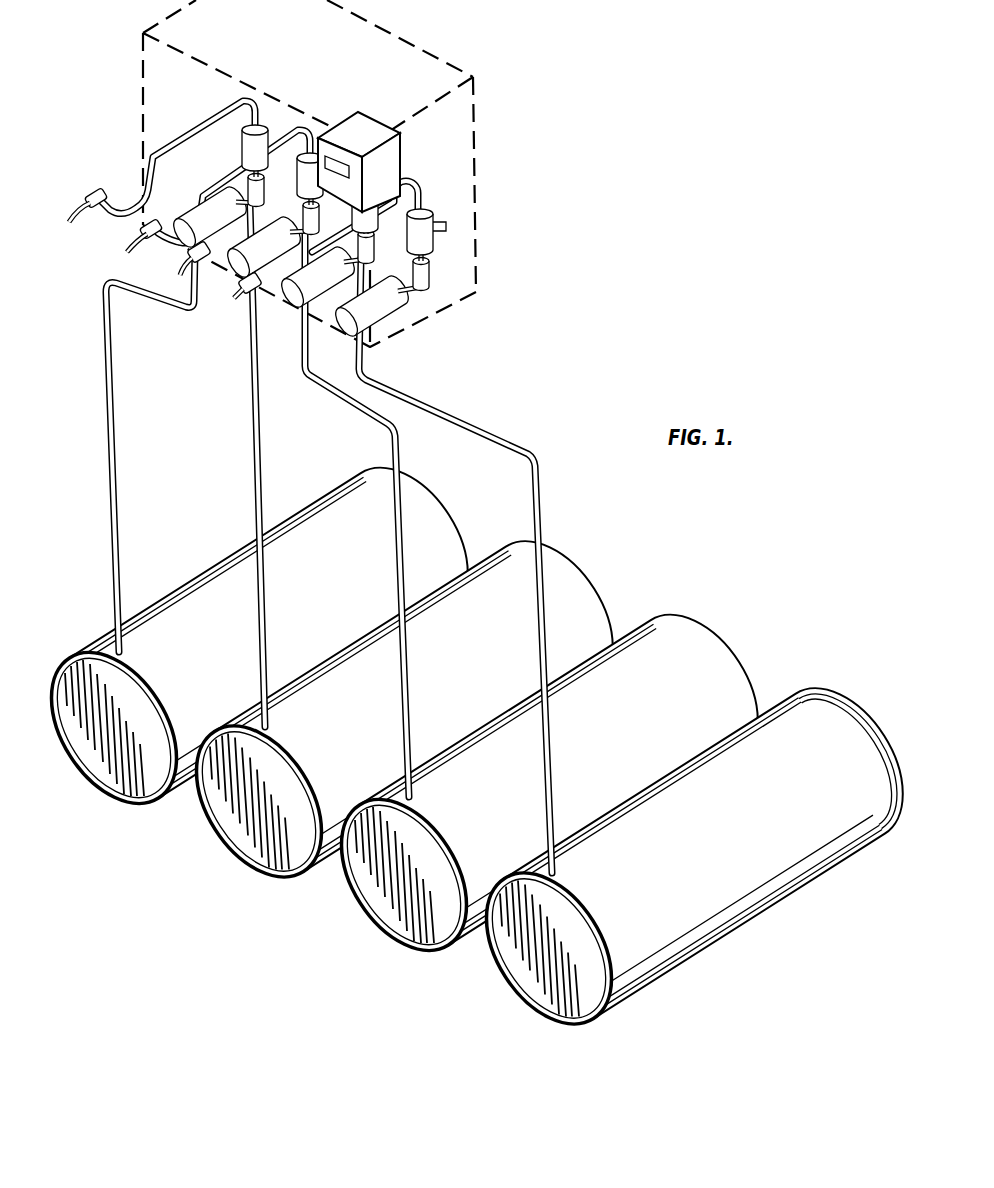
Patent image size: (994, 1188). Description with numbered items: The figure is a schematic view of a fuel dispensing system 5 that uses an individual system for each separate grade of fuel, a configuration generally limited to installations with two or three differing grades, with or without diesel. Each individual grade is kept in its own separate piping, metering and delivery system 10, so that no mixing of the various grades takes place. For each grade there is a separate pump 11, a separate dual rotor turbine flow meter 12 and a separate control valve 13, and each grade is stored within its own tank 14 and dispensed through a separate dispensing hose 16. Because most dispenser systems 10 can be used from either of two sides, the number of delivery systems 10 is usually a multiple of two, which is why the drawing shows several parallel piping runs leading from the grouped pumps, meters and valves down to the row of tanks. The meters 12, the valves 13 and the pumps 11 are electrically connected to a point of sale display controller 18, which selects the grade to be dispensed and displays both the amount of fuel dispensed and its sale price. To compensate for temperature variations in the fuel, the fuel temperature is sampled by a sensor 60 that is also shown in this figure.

The system 5 is at (400, 147).
The piping, metering and delivery system 10 is at (253, 445).
The pump 11 is at (207, 202).
The dual rotor turbine flow meter 12 is at (240, 145).
The control valve 13 is at (245, 187).
The tank 14 is at (214, 823).
The dispensing hose 16 is at (160, 238).
The point of sale display controller 18 is at (370, 125).
The sensor 60 is at (289, 134).